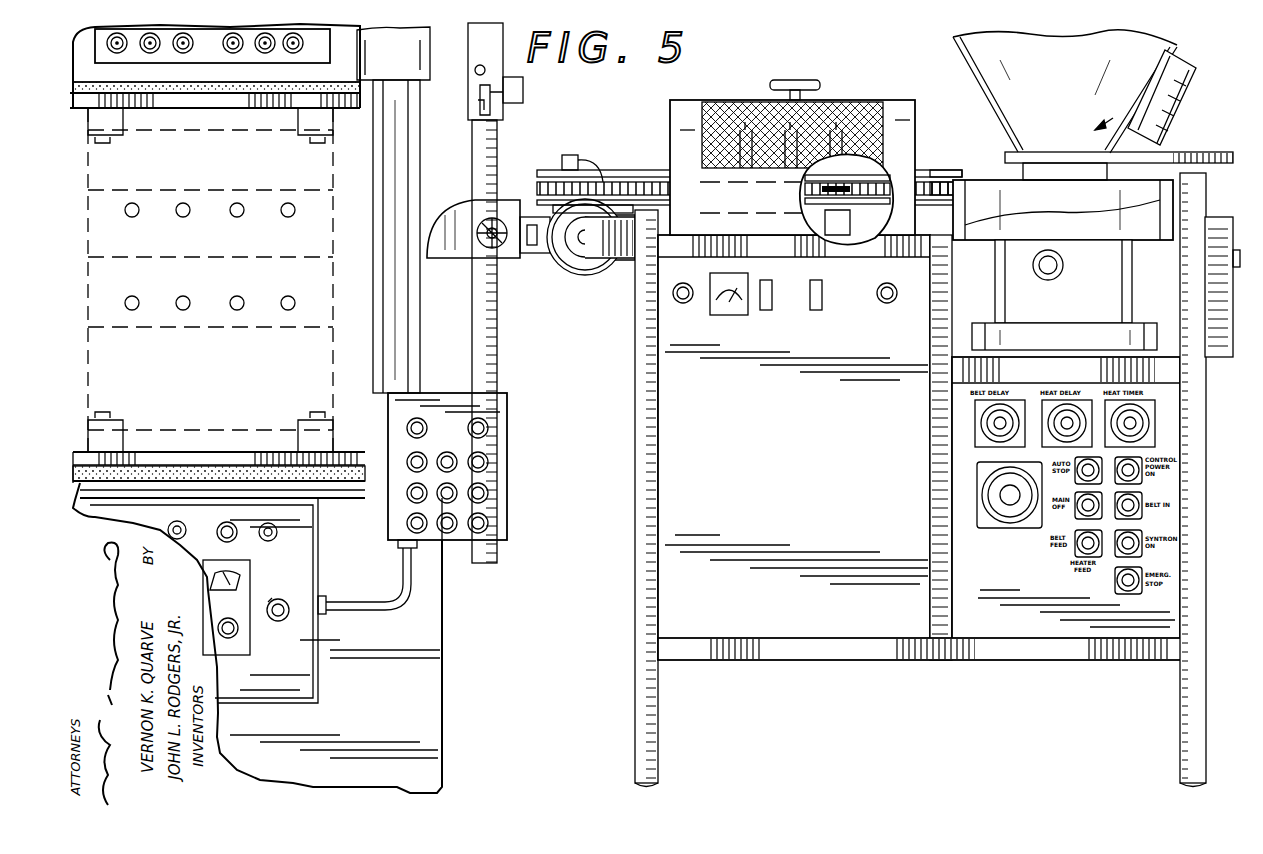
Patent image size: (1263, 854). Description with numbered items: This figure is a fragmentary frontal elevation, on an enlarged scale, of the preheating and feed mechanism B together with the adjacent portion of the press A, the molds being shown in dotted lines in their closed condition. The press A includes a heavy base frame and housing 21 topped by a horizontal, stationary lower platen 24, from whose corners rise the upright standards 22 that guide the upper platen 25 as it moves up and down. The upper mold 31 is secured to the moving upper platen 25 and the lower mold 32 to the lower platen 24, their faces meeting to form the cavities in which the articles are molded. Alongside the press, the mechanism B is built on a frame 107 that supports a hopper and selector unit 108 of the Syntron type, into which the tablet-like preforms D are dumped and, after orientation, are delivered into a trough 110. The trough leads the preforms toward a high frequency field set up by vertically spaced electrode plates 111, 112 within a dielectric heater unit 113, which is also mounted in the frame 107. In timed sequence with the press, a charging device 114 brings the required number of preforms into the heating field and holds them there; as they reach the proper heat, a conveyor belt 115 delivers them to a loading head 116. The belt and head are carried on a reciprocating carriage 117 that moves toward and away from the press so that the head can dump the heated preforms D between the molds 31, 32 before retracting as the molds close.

The base frame and housing 21 is at (420, 773).
The standards 22 is at (398, 150).
The lower platen 24 is at (172, 492).
The upper platen 25 is at (228, 72).
The upper mold 31 is at (334, 231).
The lower mold 32 is at (334, 286).
The frame 107 is at (693, 660).
The hopper and selector unit 108 is at (1113, 200).
The trough 110 is at (888, 216).
The electrode plate 111 is at (870, 180).
The electrode plate 112 is at (872, 228).
The dielectric heater unit 113 is at (688, 225).
The charging device 114 is at (937, 188).
The conveyor belt 115 is at (545, 215).
The loading head 116 is at (452, 212).
The reciprocating carriage 117 is at (526, 222).
The press A is at (447, 671).
The preheater-loader mechanism B is at (633, 444).
The preforms D is at (952, 153).